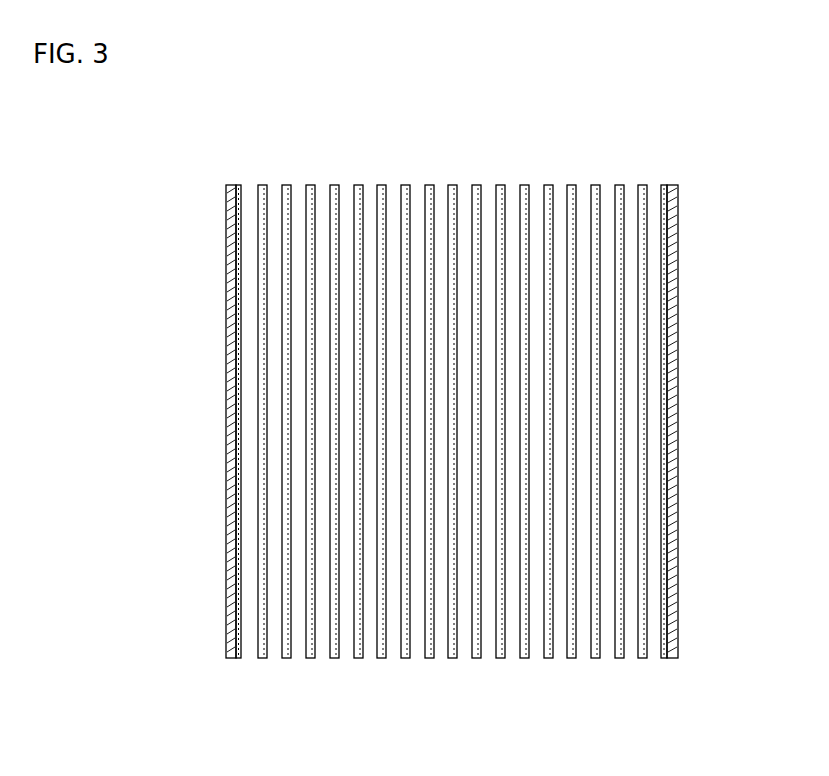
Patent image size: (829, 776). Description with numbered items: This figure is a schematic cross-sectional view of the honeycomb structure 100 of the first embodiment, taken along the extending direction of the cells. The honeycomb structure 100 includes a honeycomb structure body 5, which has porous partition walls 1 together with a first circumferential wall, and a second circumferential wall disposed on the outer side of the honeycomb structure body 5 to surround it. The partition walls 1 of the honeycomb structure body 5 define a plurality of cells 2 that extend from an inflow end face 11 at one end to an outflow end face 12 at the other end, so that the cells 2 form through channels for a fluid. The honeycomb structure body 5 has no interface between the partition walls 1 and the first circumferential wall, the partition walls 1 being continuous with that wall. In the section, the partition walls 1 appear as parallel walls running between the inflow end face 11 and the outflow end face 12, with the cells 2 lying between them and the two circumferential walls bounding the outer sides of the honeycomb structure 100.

The honeycomb structure 100 is at (737, 104).
The partition walls 1 is at (498, 192).
The cells 2 is at (417, 192).
The honeycomb structure body 5 is at (597, 184).
The inflow end face 11 is at (264, 182).
The outflow end face 12 is at (264, 663).